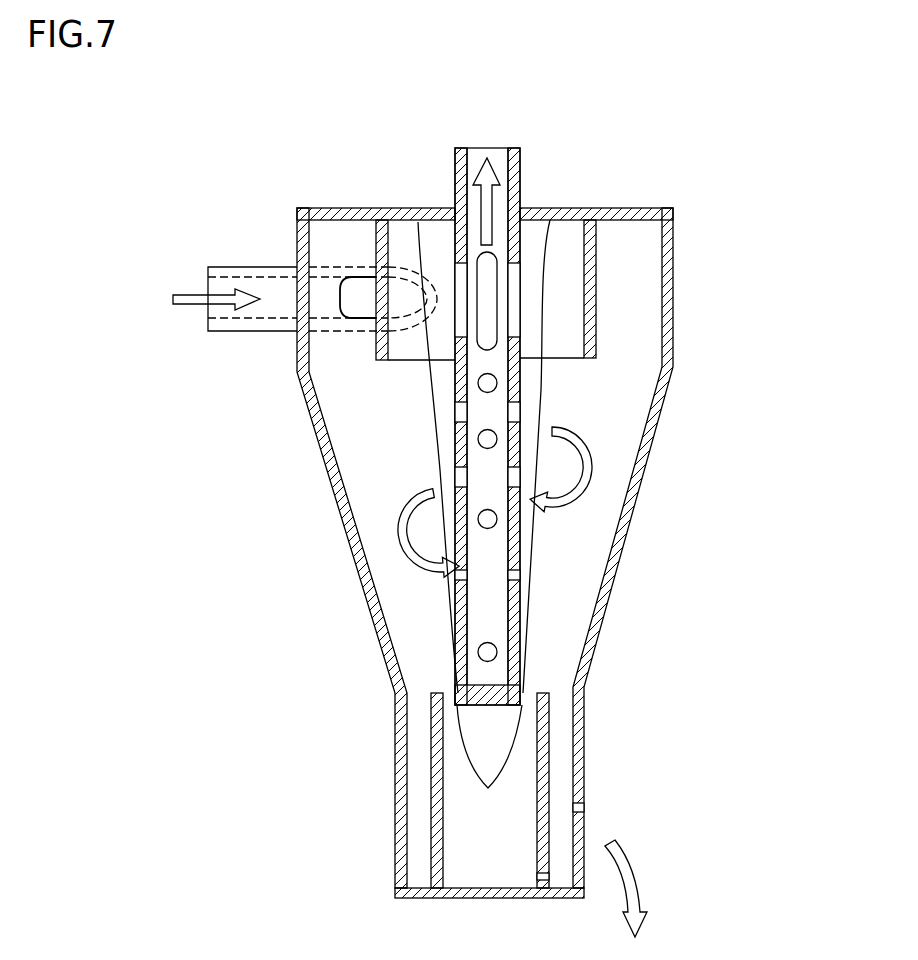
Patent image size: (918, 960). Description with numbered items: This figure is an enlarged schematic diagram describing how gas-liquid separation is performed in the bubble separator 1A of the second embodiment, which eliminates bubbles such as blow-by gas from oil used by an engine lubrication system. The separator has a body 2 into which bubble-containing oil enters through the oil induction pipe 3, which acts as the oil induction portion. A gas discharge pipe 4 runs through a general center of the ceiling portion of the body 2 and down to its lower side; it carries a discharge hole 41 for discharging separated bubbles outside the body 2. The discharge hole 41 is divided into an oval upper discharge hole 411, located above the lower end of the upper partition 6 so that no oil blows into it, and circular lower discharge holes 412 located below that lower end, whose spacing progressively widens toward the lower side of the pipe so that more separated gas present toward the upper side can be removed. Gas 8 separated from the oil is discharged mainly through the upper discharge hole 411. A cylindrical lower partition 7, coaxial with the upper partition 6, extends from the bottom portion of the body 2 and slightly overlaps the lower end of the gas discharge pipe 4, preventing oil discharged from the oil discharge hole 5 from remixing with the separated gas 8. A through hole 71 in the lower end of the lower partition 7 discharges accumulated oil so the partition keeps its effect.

The bubble separator 1A is at (693, 227).
The body 2 is at (673, 352).
The oil induction pipe 3 is at (226, 267).
The gas discharge pipe 4 is at (520, 152).
The discharge hole 41 is at (678, 457).
The upper discharge hole 411 is at (497, 353).
The lower discharge hole 412 is at (493, 383).
The oil discharge hole 5 is at (592, 815).
The upper partition 6 is at (595, 283).
The lower partition 7 is at (595, 816).
The through hole 71 is at (540, 877).
The gas 8 is at (450, 442).